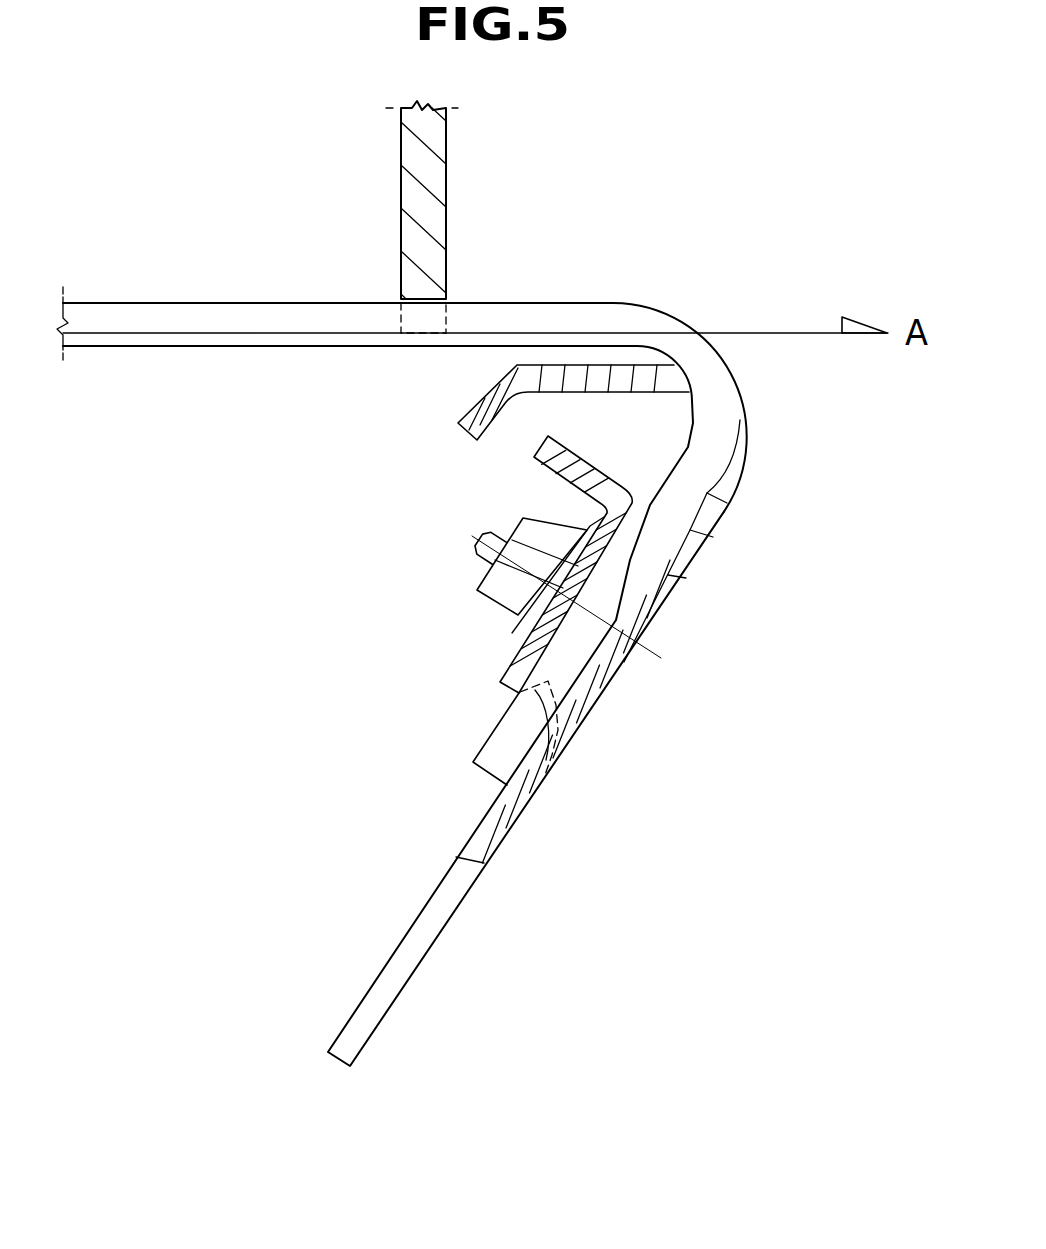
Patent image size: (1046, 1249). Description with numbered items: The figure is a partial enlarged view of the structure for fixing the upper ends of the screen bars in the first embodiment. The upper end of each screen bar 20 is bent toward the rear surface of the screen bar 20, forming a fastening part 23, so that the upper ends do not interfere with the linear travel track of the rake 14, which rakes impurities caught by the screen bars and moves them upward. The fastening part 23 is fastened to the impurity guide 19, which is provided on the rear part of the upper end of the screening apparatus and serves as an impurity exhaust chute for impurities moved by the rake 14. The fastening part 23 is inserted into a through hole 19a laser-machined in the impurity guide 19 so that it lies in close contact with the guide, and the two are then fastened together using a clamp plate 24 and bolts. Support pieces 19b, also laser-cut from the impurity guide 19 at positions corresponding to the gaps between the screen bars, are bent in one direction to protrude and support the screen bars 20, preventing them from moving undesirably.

The rake 14 is at (435, 147).
The screen bar 20 is at (160, 318).
The impurity guide 19 is at (400, 972).
The through hole 19a is at (745, 459).
The support piece 19b is at (537, 710).
The fastening part 23 is at (492, 763).
The clamp plate 24 is at (546, 458).